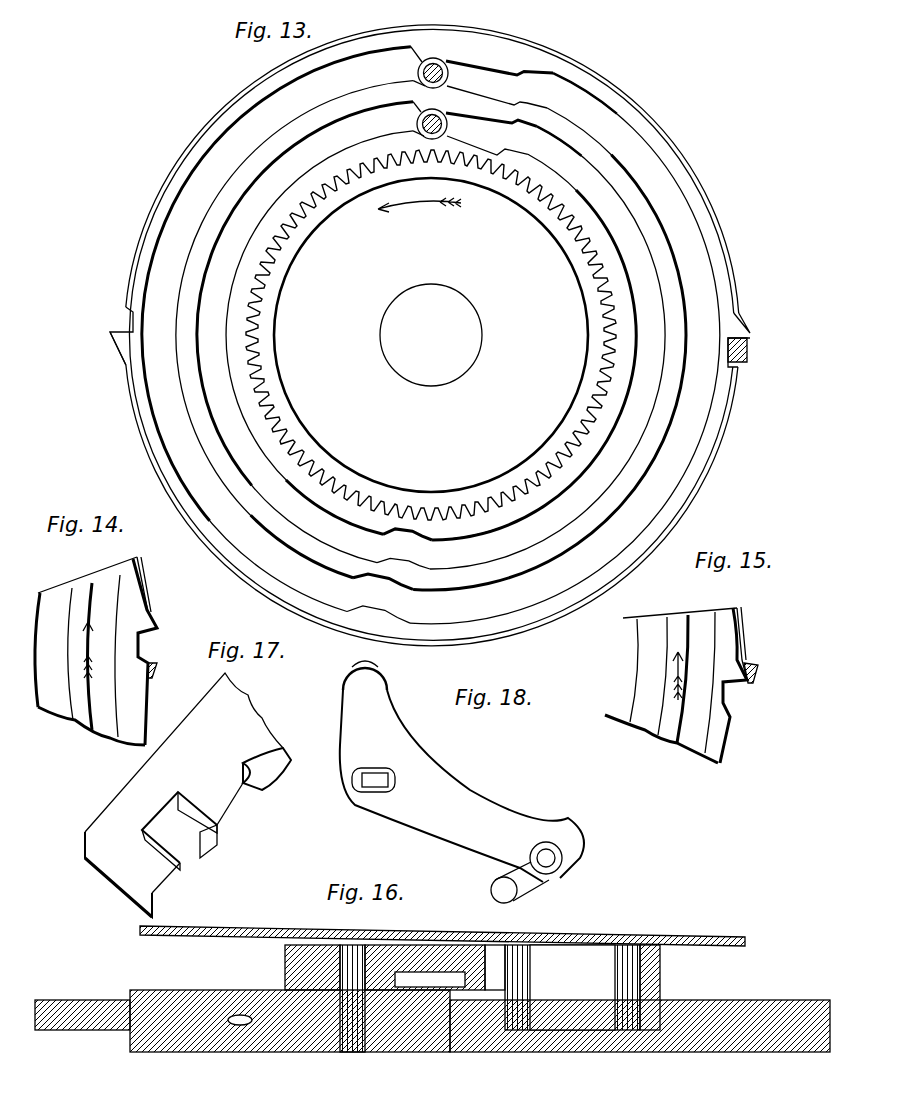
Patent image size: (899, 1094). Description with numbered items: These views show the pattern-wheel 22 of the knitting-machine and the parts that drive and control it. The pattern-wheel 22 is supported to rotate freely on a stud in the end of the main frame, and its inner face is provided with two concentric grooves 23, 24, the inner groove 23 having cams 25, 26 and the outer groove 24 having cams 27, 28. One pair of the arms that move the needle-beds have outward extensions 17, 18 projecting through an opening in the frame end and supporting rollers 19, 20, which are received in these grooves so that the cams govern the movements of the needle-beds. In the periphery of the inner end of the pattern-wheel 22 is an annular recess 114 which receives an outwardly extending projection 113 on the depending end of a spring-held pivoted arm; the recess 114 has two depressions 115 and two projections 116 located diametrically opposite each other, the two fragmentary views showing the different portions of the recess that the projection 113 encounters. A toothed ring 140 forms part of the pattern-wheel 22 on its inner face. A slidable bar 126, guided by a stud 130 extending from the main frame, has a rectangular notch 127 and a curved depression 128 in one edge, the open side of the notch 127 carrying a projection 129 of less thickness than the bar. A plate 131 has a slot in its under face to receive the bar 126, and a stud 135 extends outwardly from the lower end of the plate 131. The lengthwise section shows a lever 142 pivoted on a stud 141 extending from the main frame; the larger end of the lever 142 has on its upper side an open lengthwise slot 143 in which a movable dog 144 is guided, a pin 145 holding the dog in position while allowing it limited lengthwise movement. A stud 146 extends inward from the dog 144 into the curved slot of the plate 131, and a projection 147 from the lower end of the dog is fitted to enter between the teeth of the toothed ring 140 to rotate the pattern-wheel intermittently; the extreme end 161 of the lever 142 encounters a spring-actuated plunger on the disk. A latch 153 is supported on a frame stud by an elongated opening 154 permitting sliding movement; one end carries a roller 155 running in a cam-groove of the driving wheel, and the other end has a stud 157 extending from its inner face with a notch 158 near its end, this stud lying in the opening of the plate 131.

In FIG. 13, the outward extension 17 is at (447, 126).
In FIG. 13, the outward extension 18 is at (443, 73).
In FIG. 13, the roller 19 is at (421, 124).
In FIG. 13, the roller 20 is at (421, 73).
In FIG. 13, the pattern-wheel 22 is at (431, 335).
In FIG. 14, the pattern-wheel 22 is at (86, 651).
In FIG. 15, the pattern-wheel 22 is at (671, 685).
In FIG. 13, the concentric groove 23 is at (431, 335).
In FIG. 14, the concentric groove 23 is at (74, 656).
In FIG. 15, the concentric groove 23 is at (666, 679).
In FIG. 13, the concentric groove 24 is at (431, 335).
In FIG. 14, the concentric groove 24 is at (132, 652).
In FIG. 15, the concentric groove 24 is at (722, 685).
In FIG. 13, the cam 25 is at (491, 134).
In FIG. 13, the cam 26 is at (404, 549).
In FIG. 13, the cam 27 is at (499, 84).
In FIG. 13, the cam 28 is at (380, 598).
In FIG. 13, the projection 113 is at (745, 353).
In FIG. 14, the projection 113 is at (169, 672).
In FIG. 15, the projection 113 is at (766, 674).
In FIG. 13, the annular recess 114 is at (432, 335).
In FIG. 14, the annular recess 114 is at (156, 592).
In FIG. 15, the annular recess 114 is at (754, 641).
In FIG. 13, the depression 115 is at (133, 318).
In FIG. 14, the depression 115 is at (150, 645).
In FIG. 15, the depression 115 is at (735, 705).
In FIG. 13, the projection 116 is at (116, 343).
In FIG. 14, the projection 116 is at (169, 620).
In FIG. 15, the projection 116 is at (759, 664).
In FIG. 17, the slidable bar 126 is at (184, 795).
In FIG. 17, the rectangular notch 127 is at (179, 831).
In FIG. 17, the curved depression 128 is at (267, 779).
In FIG. 17, the projection 129 is at (209, 851).
In FIG. 16, the stud 130 is at (442, 932).
In FIG. 16, the plate 131 is at (430, 979).
In FIG. 16, the stud 135 is at (395, 967).
In FIG. 13, the toothed ring 140 is at (272, 336).
In FIG. 16, the stud 141 is at (572, 999).
In FIG. 16, the lever 142 is at (572, 999).
In FIG. 16, the lengthwise slot 143 is at (480, 1012).
In FIG. 16, the movable dog 144 is at (262, 1063).
In FIG. 16, the pin 145 is at (239, 1027).
In FIG. 16, the stud 146 is at (354, 1008).
In FIG. 16, the projection 147 is at (144, 1063).
In FIG. 18, the latch 153 is at (462, 775).
In FIG. 18, the elongated opening 154 is at (390, 780).
In FIG. 18, the roller 155 is at (380, 668).
In FIG. 18, the stud 157 is at (544, 858).
In FIG. 18, the notch 158 is at (520, 887).
In FIG. 16, the extreme end 161 is at (82, 1025).